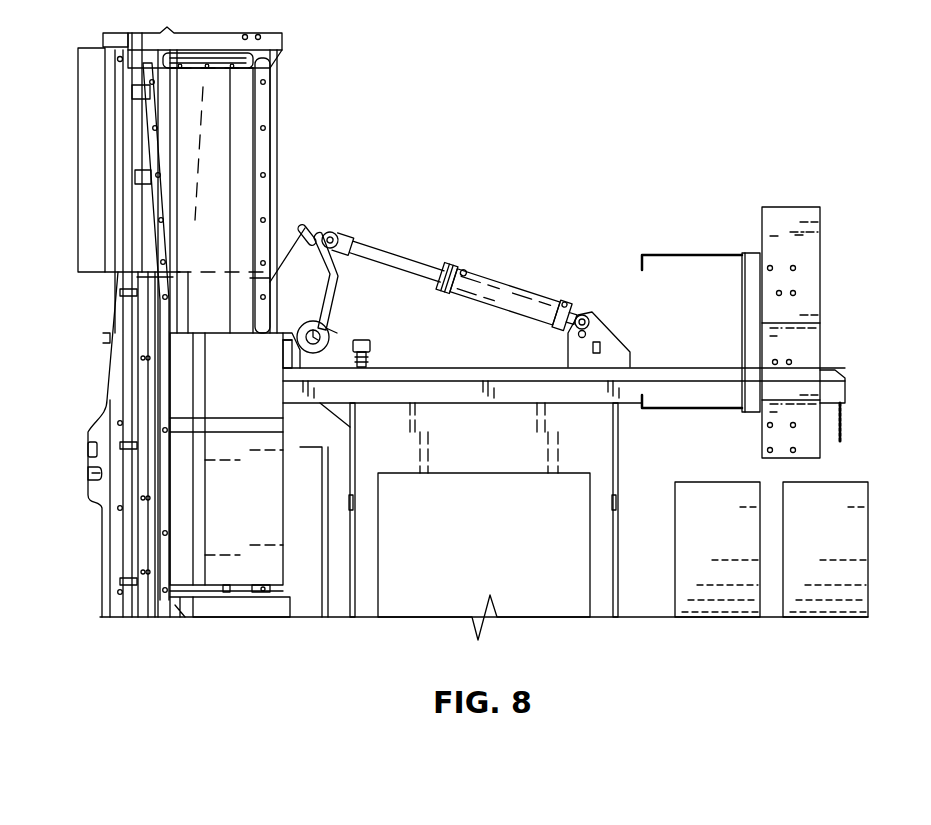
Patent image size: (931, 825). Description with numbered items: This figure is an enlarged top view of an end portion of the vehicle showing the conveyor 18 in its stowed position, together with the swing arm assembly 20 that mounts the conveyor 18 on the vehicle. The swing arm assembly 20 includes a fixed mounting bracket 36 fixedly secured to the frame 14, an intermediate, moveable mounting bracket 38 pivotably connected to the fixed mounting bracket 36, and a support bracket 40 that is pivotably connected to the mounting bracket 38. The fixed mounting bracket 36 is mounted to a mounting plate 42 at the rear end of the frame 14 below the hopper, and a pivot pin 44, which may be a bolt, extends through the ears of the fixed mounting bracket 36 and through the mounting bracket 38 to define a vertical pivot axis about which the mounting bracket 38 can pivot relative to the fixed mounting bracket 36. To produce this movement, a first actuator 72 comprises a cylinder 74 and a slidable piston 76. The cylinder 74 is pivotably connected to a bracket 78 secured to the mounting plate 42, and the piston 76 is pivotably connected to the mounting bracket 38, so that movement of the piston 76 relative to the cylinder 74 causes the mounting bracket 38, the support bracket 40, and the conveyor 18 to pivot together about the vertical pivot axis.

The frame 14 is at (607, 460).
The conveyor 18 is at (90, 465).
The swing arm assembly 20 is at (606, 99).
The fixed mounting bracket 36 is at (338, 360).
The moveable mounting bracket 38 is at (313, 240).
The support bracket 40 is at (286, 245).
The mounting plate 42 is at (688, 378).
The pivot pin 44 is at (332, 316).
The first actuator 72 is at (428, 268).
The cylinder 74 is at (520, 300).
The piston 76 is at (388, 252).
The bracket 78 is at (596, 340).